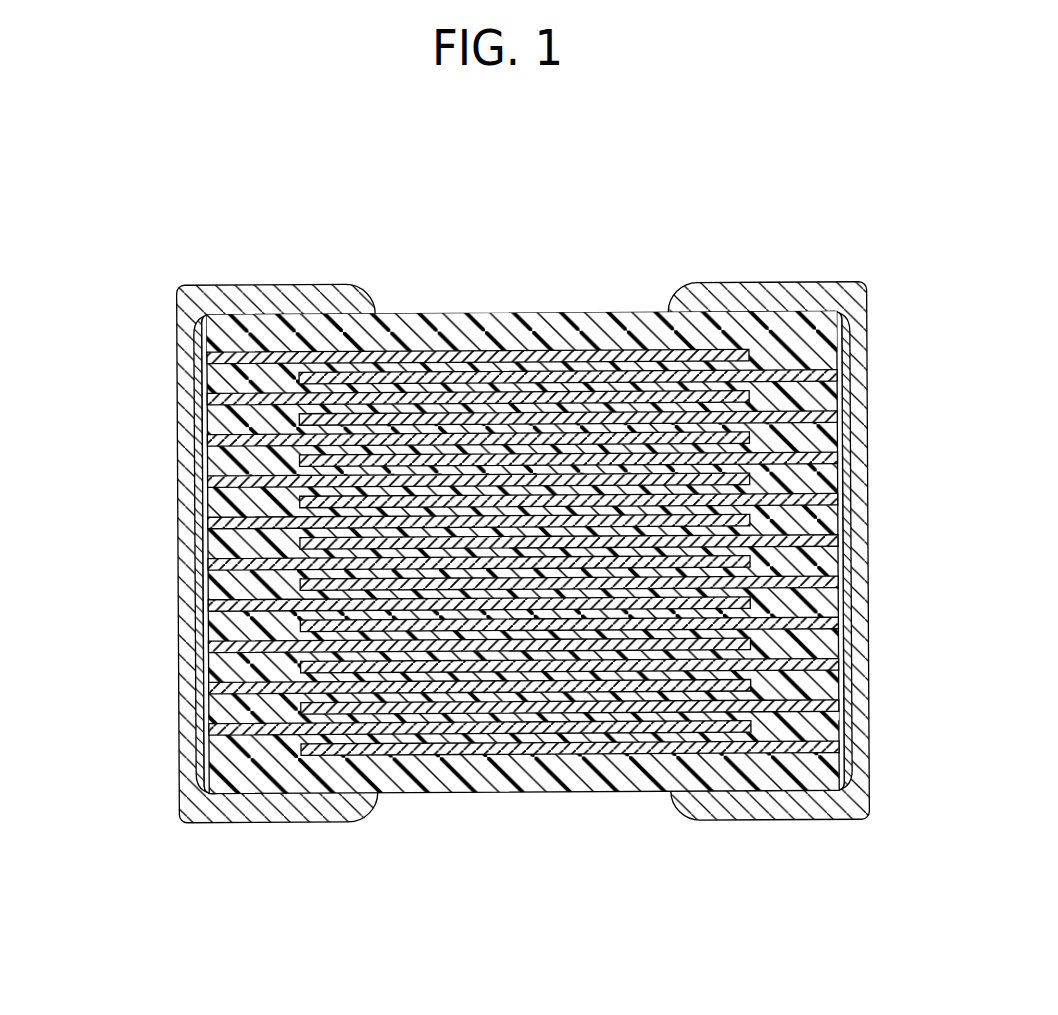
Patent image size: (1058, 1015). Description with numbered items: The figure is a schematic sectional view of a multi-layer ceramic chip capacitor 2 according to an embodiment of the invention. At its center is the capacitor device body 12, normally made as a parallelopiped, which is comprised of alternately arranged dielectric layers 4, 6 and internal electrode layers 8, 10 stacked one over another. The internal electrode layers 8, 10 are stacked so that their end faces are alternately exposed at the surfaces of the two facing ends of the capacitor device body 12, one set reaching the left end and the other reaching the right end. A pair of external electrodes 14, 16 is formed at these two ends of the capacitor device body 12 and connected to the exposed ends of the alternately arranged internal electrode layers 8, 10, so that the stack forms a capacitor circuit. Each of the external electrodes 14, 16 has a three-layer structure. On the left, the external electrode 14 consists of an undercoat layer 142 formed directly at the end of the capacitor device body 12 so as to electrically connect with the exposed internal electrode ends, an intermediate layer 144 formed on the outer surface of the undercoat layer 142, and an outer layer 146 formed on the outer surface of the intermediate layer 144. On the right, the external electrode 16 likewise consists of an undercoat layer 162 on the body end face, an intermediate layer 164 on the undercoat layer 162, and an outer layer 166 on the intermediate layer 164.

The multi-layer ceramic chip capacitor 2 is at (657, 218).
The dielectric layer 4 is at (610, 740).
The dielectric layer 6 is at (658, 716).
The internal electrode layer 8 is at (553, 754).
The internal electrode layer 10 is at (488, 733).
The capacitor device body 12 is at (471, 311).
The external electrode 14 is at (176, 350).
The undercoat layer 142 is at (205, 398).
The intermediate layer 144 is at (197, 447).
The outer layer 146 is at (188, 492).
The external electrode 16 is at (871, 303).
The undercoat layer 162 is at (845, 368).
The intermediate layer 164 is at (850, 408).
The outer layer 166 is at (859, 453).